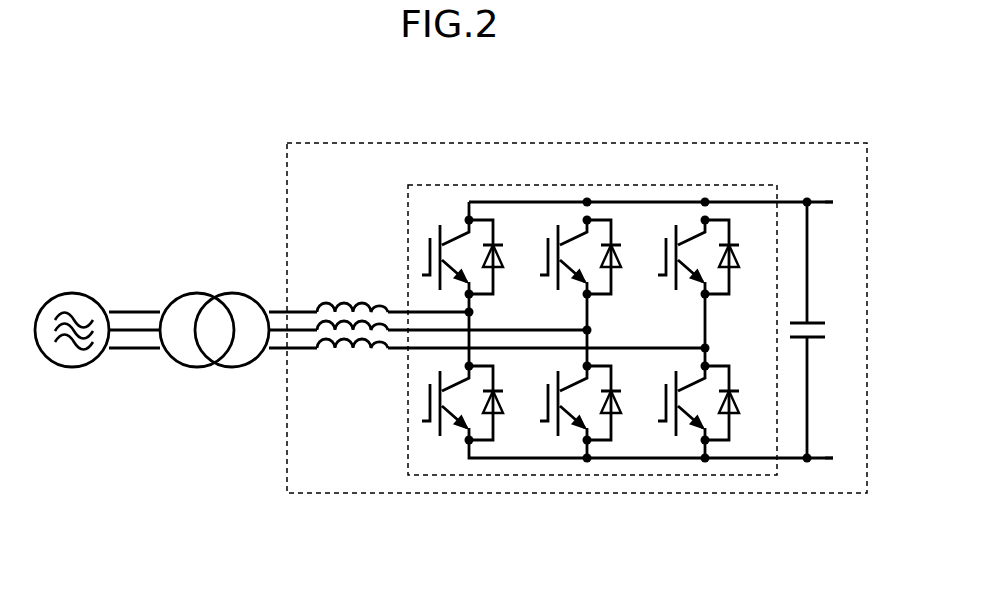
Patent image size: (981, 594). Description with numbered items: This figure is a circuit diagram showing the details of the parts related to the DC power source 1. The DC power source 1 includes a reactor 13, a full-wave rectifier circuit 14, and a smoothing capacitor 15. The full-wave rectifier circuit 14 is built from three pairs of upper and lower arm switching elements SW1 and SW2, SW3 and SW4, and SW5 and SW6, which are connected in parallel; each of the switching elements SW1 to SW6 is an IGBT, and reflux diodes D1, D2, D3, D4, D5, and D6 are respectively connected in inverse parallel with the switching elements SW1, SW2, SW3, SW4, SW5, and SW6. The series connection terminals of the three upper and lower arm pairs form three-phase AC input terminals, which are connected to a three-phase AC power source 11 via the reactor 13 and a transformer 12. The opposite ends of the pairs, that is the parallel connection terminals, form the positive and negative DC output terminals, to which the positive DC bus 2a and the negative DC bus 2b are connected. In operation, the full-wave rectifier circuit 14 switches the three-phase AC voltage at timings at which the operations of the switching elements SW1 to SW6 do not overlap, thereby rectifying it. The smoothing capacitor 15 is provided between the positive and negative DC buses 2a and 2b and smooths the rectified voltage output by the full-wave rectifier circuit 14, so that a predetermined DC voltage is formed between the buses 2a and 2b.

The DC power source 1 is at (602, 143).
The positive DC bus 2a is at (833, 202).
The negative DC bus 2b is at (833, 458).
The three-phase AC power source 11 is at (80, 292).
The transformer 12 is at (222, 292).
The reactor 13 is at (344, 300).
The full-wave rectifier circuit 14 is at (407, 210).
The smoothing capacitor 15 is at (815, 323).
The switching element SW1 is at (455, 234).
The switching element SW2 is at (462, 427).
The switching element SW3 is at (573, 233).
The switching element SW4 is at (579, 427).
The switching element SW5 is at (691, 233).
The switching element SW6 is at (699, 427).
The reflux diode D1 is at (501, 257).
The reflux diode D2 is at (501, 403).
The reflux diode D3 is at (619, 257).
The reflux diode D4 is at (619, 403).
The reflux diode D5 is at (737, 257).
The reflux diode D6 is at (737, 403).